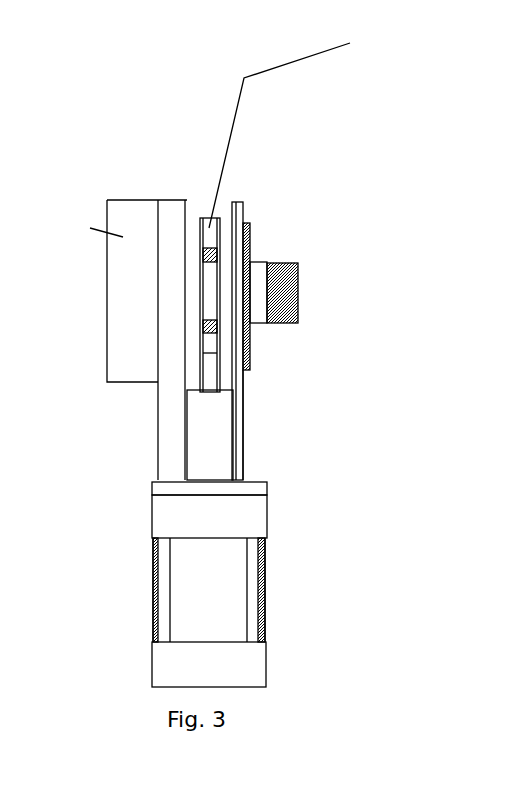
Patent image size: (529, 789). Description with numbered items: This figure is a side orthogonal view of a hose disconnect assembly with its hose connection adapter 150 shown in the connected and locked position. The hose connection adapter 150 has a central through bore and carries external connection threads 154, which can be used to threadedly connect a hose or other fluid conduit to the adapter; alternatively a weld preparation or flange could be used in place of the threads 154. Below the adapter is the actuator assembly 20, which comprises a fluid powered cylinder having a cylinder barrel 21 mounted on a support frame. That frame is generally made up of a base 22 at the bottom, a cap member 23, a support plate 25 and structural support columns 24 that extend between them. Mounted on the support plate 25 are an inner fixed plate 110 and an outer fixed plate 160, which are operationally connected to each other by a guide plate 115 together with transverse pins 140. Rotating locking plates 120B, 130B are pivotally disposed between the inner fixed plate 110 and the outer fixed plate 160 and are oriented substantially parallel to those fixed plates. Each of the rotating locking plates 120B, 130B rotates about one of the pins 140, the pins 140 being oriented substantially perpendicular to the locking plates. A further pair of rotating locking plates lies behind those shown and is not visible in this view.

The actuator assembly 20 is at (148, 582).
The cylinder barrel 21 is at (228, 602).
The base 22 is at (0, 33).
The cap member 23 is at (248, 520).
The structural support columns 24 is at (260, 627).
The support plate 25 is at (267, 487).
The inner fixed plate 110 is at (168, 223).
The guide plate 115 is at (222, 433).
The rotating locking plate 120B is at (232, 203).
The rotating locking plate 130B is at (201, 215).
The transverse pins 140 is at (311, 127).
The hose connection adapter 150 is at (337, 273).
The external connection threads 154 is at (282, 325).
The outer fixed plate 160 is at (247, 203).